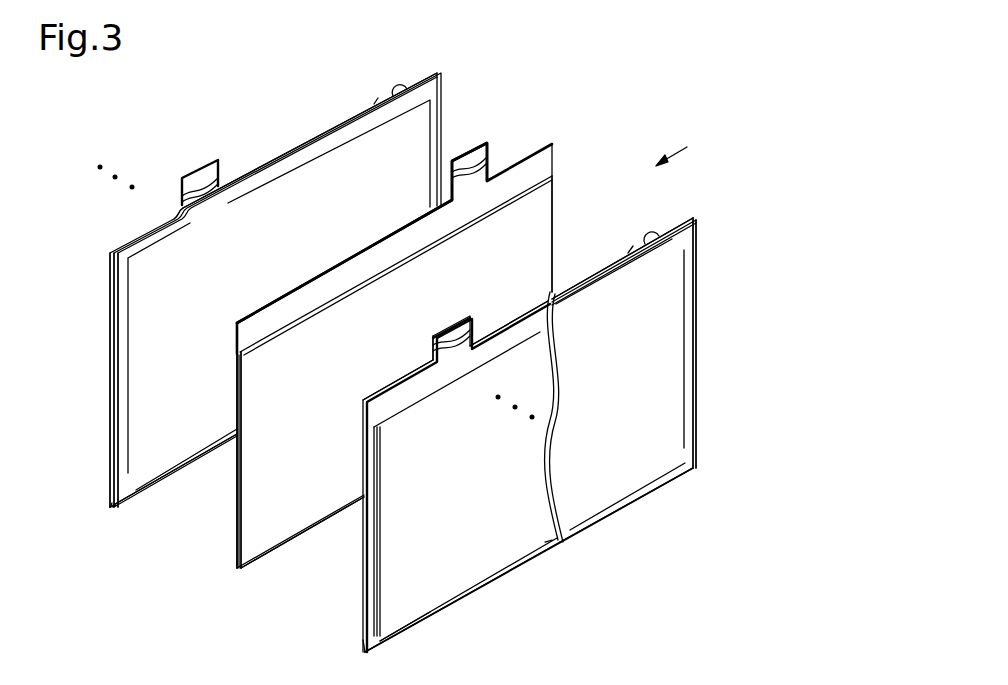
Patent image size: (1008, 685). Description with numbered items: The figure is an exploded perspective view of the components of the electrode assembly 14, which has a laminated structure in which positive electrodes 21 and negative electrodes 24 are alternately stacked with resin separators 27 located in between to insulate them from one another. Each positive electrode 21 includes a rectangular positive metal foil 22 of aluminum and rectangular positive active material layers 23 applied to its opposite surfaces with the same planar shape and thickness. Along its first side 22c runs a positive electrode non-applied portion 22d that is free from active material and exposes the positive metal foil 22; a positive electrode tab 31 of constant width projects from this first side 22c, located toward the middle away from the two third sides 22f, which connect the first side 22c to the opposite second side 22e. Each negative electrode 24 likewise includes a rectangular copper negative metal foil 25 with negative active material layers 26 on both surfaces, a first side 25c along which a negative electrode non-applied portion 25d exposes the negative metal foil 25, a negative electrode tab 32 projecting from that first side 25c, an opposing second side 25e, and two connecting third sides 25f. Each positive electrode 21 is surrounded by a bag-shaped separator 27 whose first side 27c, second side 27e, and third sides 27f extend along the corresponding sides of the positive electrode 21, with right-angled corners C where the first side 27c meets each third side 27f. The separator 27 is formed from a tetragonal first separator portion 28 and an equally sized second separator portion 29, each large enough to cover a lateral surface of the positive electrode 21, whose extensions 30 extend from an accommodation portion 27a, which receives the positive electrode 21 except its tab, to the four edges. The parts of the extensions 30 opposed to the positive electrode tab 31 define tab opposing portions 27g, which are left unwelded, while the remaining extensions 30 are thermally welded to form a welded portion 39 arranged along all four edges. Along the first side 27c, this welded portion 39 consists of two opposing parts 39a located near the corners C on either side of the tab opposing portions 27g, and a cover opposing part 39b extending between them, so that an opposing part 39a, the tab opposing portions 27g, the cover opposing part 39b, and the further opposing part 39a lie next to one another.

The electrode assembly 14 is at (689, 150).
The positive electrode 21 is at (370, 597).
The positive metal foil 22 is at (363, 573).
The first side 22c is at (405, 376).
The positive electrode non-applied portion 22d is at (505, 328).
The second side 22e is at (465, 596).
The third sides 22f is at (378, 478).
The positive active material layers 23 is at (366, 543).
The negative electrode 24 is at (237, 551).
The negative metal foil 25 is at (237, 515).
The first side 25c is at (262, 309).
The negative electrode non-applied portion 25d is at (321, 275).
The second side 25e is at (310, 530).
The third sides 25f is at (237, 393).
The negative active material layers 26 is at (237, 421).
The separator 27 is at (438, 71).
The accommodation portion 27a is at (420, 118).
The first side 27c is at (290, 151).
The second side 27e is at (161, 479).
The third sides 27f is at (110, 343).
The tab opposing portions 27g is at (190, 200).
The first separator portion 28 is at (112, 509).
The second separator portion 29 is at (110, 507).
The extensions 30 is at (115, 300).
The positive electrode tab 31 is at (206, 176).
The negative electrode tab 32 is at (468, 160).
The welded portion 39 is at (118, 413).
The opposing parts 39a is at (110, 252).
The cover opposing part 39b is at (331, 128).
The corners C is at (110, 252).